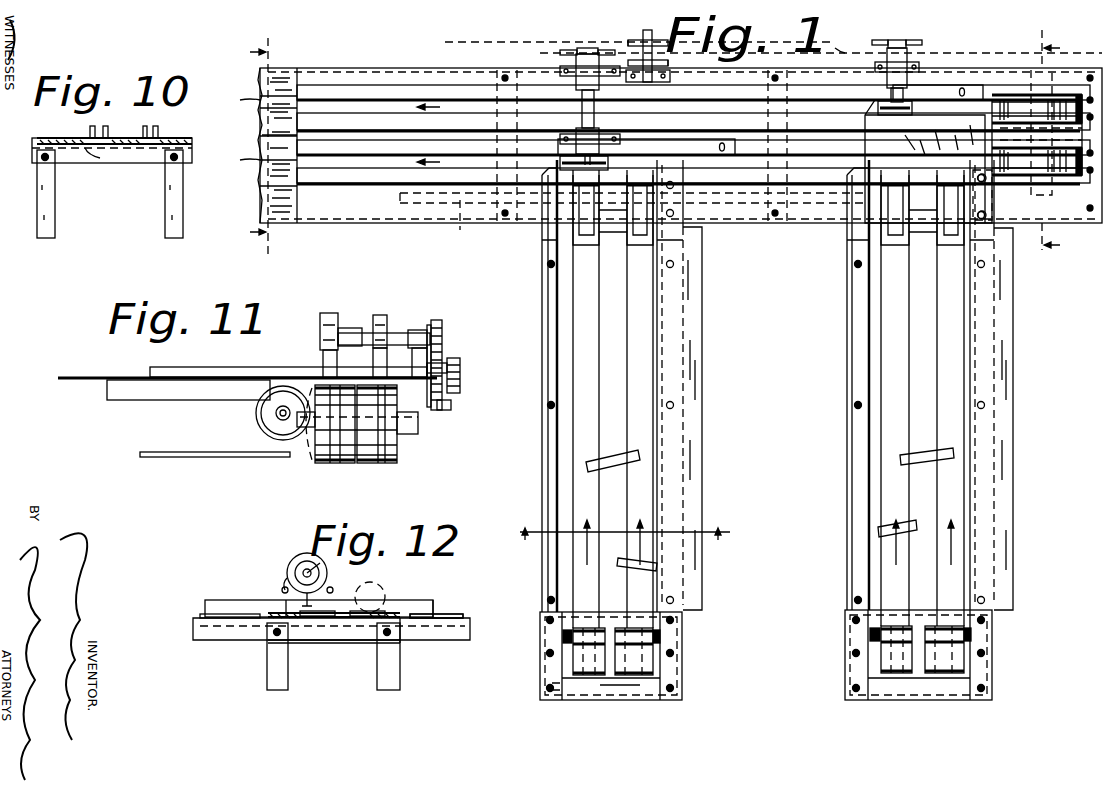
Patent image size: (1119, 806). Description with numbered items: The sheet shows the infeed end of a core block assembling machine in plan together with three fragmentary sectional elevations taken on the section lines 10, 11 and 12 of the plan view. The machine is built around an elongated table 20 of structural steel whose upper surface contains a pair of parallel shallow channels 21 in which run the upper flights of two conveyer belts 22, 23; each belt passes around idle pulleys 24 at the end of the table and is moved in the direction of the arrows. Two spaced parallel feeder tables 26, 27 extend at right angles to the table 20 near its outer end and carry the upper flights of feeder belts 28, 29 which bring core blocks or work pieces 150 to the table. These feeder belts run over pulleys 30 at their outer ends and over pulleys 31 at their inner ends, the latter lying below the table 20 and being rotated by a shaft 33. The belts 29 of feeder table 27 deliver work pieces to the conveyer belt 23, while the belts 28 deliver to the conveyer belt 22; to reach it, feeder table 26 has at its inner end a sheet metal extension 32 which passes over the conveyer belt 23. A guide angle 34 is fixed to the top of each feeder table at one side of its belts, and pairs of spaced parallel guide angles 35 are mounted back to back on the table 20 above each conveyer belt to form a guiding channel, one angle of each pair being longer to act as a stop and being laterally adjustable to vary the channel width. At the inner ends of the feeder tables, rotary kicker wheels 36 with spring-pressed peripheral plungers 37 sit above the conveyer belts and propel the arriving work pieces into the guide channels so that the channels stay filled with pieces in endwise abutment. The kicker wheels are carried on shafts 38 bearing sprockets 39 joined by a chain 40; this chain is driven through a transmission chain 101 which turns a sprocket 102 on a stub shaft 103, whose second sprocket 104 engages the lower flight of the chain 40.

In FIG. 1, the section line 10— 10 is at (265, 142).
In FIG. 1, the section line 11— 11 is at (1045, 142).
In FIG. 1, the section line 12— 12 is at (625, 530).
In FIG. 1, the elongated table 20 is at (372, 218).
In FIG. 10, the elongated table 20 is at (50, 142).
In FIG. 12, the elongated table 20 is at (233, 618).
In FIG. 1, the shallow channels 21 is at (279, 141).
In FIG. 10, the shallow channels 21 is at (104, 152).
In FIG. 1, the conveyer belt 22 is at (236, 99).
In FIG. 10, the conveyer belt 22 is at (92, 138).
In FIG. 11, the conveyer belt 22 is at (325, 375).
In FIG. 1, the conveyer belt 23 is at (236, 159).
In FIG. 10, the conveyer belt 23 is at (146, 128).
In FIG. 11, the conveyer belt 23 is at (380, 377).
In FIG. 12, the conveyer belt 23 is at (440, 612).
In FIG. 11, the idle pulleys 24 is at (400, 452).
In FIG. 1, the feeder table 26 is at (1003, 420).
In FIG. 11, the feeder table 26 is at (130, 385).
In FIG. 1, the feeder table 27 is at (690, 440).
In FIG. 12, the feeder table 27 is at (403, 617).
In FIG. 1, the feeder belts 28 is at (955, 372).
In FIG. 11, the feeder belts 28 is at (98, 376).
In FIG. 1, the feeder belts 29 is at (643, 380).
In FIG. 12, the feeder belts 29 is at (362, 614).
In FIG. 1, the pulleys 30 is at (618, 678).
In FIG. 1, the pulleys 31 is at (612, 232).
In FIG. 11, the pulleys 31 is at (258, 412).
In FIG. 1, the sheet metal extension 32 is at (968, 135).
In FIG. 1, the shaft 33 is at (462, 226).
In FIG. 11, the shaft 33 is at (283, 418).
In FIG. 1, the guide angle 34 is at (548, 422).
In FIG. 11, the guide angle 34 is at (204, 370).
In FIG. 12, the guide angle 34 is at (287, 608).
In FIG. 1, the guide angles 35 is at (355, 125).
In FIG. 10, the guide angles 35 is at (105, 148).
In FIG. 12, the guide angles 35 is at (336, 608).
In FIG. 1, the rotary kicker wheels 36 is at (600, 155).
In FIG. 11, the rotary kicker wheels 36 is at (376, 320).
In FIG. 12, the rotary kicker wheels 36 is at (288, 565).
In FIG. 1, the spring-pressed peripheral plungers 37 is at (885, 113).
In FIG. 11, the spring-pressed peripheral plungers 37 is at (320, 352).
In FIG. 12, the spring-pressed peripheral plungers 37 is at (285, 580).
In FIG. 1, the shafts 38 is at (596, 102).
In FIG. 11, the shafts 38 is at (398, 338).
In FIG. 12, the shafts 38 is at (320, 563).
In FIG. 1, the sprockets 39 is at (560, 53).
In FIG. 11, the sprockets 39 is at (436, 335).
In FIG. 1, the chain 40 is at (848, 38).
In FIG. 1, the transmission chain 101 is at (480, 42).
In FIG. 1, the sprocket 102 is at (630, 40).
In FIG. 11, the sprocket 102 is at (458, 358).
In FIG. 1, the stub shaft 103 is at (650, 30).
In FIG. 11, the stub shaft 103 is at (460, 374).
In FIG. 1, the sprocket 104 is at (668, 62).
In FIG. 11, the sprocket 104 is at (450, 402).
In FIG. 12, the sprocket 104 is at (376, 588).
In FIG. 1, the core blocks or work pieces 150 is at (612, 475).